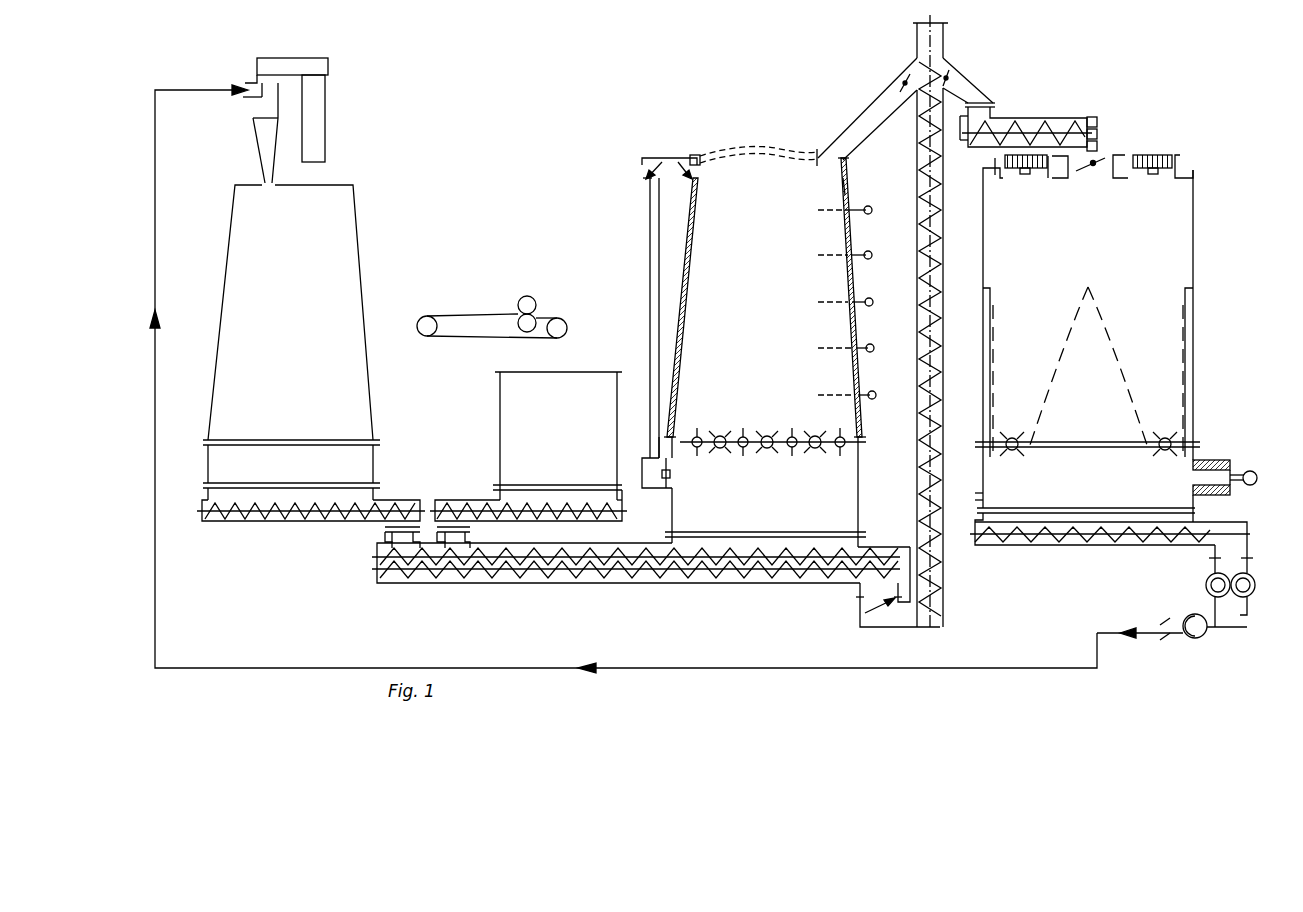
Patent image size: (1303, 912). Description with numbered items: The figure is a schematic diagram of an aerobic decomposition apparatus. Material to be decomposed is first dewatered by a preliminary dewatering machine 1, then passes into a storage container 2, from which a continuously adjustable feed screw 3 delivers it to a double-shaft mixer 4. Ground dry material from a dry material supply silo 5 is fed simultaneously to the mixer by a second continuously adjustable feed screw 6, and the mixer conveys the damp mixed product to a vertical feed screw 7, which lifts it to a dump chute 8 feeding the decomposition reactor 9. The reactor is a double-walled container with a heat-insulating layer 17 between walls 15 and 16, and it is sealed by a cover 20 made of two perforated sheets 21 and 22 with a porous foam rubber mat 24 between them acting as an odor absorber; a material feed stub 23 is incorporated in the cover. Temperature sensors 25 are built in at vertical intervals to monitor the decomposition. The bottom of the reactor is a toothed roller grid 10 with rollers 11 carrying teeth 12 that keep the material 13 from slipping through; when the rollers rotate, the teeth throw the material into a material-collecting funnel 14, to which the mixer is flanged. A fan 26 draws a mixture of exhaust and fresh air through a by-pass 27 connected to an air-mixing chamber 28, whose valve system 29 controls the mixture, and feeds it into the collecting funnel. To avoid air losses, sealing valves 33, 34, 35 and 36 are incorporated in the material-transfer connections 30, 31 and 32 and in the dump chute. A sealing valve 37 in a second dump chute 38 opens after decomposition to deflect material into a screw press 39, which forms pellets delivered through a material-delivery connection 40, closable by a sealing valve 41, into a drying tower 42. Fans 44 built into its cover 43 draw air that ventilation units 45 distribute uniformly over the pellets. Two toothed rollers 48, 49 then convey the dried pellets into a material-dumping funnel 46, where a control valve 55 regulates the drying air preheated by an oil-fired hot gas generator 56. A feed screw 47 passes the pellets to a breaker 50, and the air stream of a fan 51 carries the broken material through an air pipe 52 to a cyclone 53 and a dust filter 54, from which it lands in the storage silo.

The preliminary dewatering machine 1 is at (443, 322).
The storage container 2 is at (513, 398).
The continuously adjustable feed screw 3 is at (478, 507).
The double-shaft mixer 4 is at (450, 578).
The dry material supply silo 5 is at (234, 280).
The continuously adjustable feed screw 6 is at (262, 514).
The vertical feed screw 7 is at (946, 23).
The dump chute 8 is at (869, 109).
The decomposition reactor 9 is at (708, 227).
The toothed roller grid 10 is at (849, 448).
The rollers 11 is at (724, 428).
The teeth 12 is at (758, 436).
The material 13 is at (808, 382).
The material-collecting funnel 14 is at (843, 513).
The wall 15 is at (848, 187).
The wall 16 is at (849, 161).
The heat-insulating layer 17 is at (831, 184).
The cover 20 is at (738, 150).
The perforated sheet 21 is at (780, 149).
The perforated sheet 22 is at (756, 159).
The material feed stub 23 is at (818, 163).
The foam rubber mat 24 is at (712, 153).
The temperature sensors 25 is at (870, 259).
The fan 26 is at (670, 476).
The by-pass 27 is at (653, 286).
The air-mixing chamber 28 is at (645, 182).
The valve system 29 is at (669, 159).
The material-transfer connection 30 is at (400, 523).
The material-transfer connection 31 is at (470, 530).
The material-transfer connection 32 is at (861, 600).
The sealing valve 33 is at (407, 525).
The sealing valve 34 is at (453, 526).
The sealing valve 35 is at (882, 606).
The sealing valve 36 is at (905, 82).
The sealing valve 37 is at (948, 77).
The second dump chute 38 is at (972, 98).
The screw press 39 is at (1041, 123).
The material-delivery connection 40 is at (1117, 156).
The sealing valve 41 is at (1093, 165).
The drying tower 42 is at (1183, 217).
The cover 43 is at (1190, 171).
The fans 44 is at (1023, 169).
The ventilation units 45 is at (1187, 310).
The material-dumping funnel 46 is at (1105, 478).
The feed screw 47 is at (1090, 541).
The toothed roller 48 is at (1165, 452).
The toothed roller 49 is at (1011, 452).
The breaker 50 is at (1240, 573).
The fan 51 is at (1182, 637).
The air pipe 52 is at (995, 668).
The cyclone 53 is at (256, 100).
The dust filter 54 is at (317, 120).
The control valve 55 is at (964, 468).
The oil-fired hot gas generator 56 is at (1215, 463).